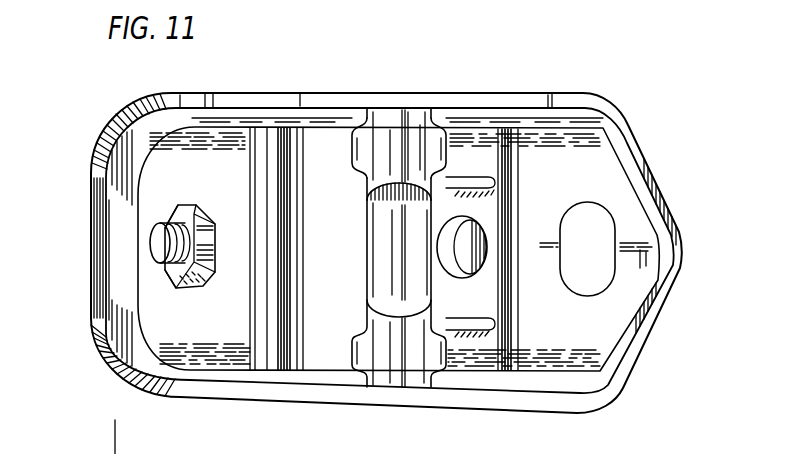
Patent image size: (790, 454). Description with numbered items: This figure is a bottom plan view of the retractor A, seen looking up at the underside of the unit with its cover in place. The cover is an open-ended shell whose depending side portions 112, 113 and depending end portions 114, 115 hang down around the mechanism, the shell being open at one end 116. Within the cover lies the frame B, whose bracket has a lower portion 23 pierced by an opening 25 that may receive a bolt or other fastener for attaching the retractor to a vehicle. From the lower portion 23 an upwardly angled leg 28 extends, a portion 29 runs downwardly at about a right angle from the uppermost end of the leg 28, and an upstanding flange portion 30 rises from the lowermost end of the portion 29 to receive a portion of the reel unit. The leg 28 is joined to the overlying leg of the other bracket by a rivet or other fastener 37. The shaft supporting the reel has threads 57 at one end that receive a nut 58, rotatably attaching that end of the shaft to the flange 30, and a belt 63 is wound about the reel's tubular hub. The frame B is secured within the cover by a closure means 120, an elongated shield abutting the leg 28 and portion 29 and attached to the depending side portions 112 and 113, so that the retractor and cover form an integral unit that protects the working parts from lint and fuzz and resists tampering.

The depending end portion 114 is at (93, 242).
The depending side portion 112 is at (510, 84).
The retractor A is at (224, 147).
The depending end portion 115 is at (676, 237).
The lower portion 23 is at (615, 330).
The open end 116 is at (114, 310).
The opening 25 is at (580, 288).
The rivet or other fastener 37 is at (470, 249).
The frame B is at (297, 373).
The upwardly angled leg 28 is at (483, 356).
The downwardly extending portion 29 is at (332, 126).
The closure means 120 is at (363, 187).
The depending side portion 113 is at (422, 406).
The upstanding flange portion 30 is at (210, 352).
The threads 57 is at (157, 233).
The nut 58 is at (204, 220).
The belt 63 is at (113, 440).